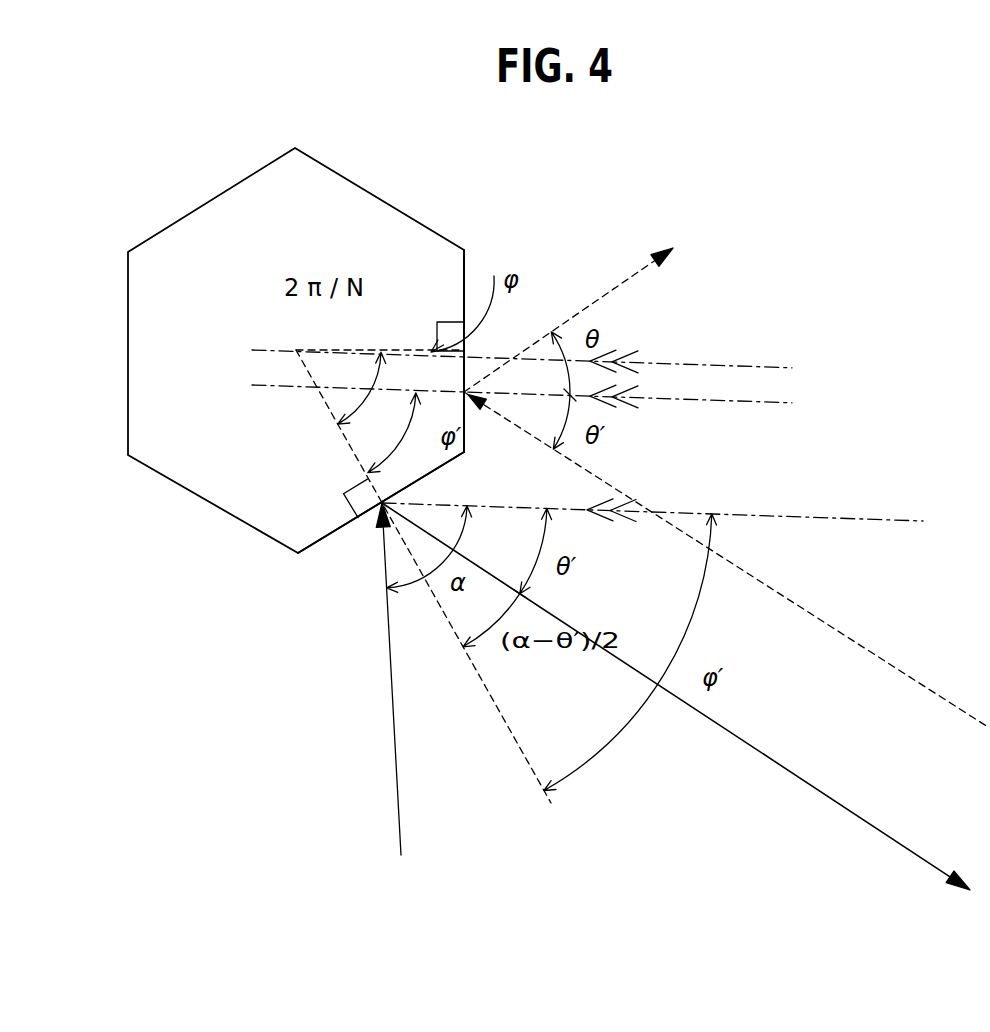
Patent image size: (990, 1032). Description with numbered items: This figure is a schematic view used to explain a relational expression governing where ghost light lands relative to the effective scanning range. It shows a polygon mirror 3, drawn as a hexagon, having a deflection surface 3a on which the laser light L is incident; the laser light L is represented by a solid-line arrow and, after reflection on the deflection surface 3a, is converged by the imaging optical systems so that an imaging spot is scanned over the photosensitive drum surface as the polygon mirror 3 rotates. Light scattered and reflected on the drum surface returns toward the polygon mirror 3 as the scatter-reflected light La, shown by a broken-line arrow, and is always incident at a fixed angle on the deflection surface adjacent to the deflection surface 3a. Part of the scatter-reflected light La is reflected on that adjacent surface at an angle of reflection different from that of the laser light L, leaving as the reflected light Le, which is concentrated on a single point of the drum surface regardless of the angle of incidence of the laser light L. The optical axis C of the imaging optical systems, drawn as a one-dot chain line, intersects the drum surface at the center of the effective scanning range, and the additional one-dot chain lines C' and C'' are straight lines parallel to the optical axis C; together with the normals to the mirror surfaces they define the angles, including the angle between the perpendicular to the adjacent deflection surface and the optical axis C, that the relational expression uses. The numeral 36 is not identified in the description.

The polygon mirror 3 is at (232, 487).
The deflection surface 3a is at (328, 536).
The reflecting surface 36 is at (465, 265).
The laser light L is at (397, 742).
The scatter-reflected light La is at (895, 670).
The reflected light Le is at (608, 292).
The optical axis C is at (652, 477).
The one-dot chain line C' is at (565, 388).
The one-dot chain line C'' is at (522, 316).